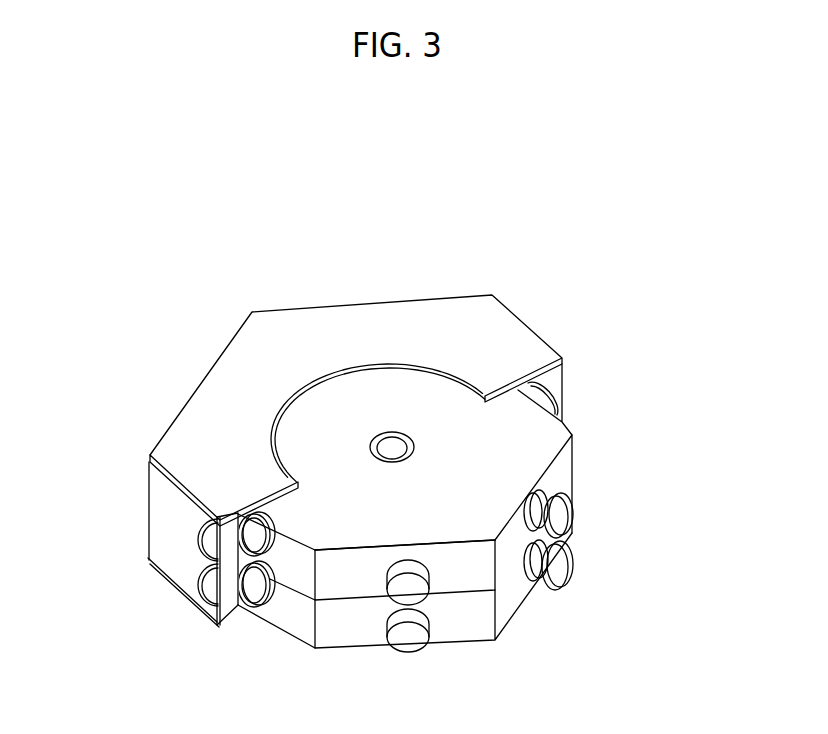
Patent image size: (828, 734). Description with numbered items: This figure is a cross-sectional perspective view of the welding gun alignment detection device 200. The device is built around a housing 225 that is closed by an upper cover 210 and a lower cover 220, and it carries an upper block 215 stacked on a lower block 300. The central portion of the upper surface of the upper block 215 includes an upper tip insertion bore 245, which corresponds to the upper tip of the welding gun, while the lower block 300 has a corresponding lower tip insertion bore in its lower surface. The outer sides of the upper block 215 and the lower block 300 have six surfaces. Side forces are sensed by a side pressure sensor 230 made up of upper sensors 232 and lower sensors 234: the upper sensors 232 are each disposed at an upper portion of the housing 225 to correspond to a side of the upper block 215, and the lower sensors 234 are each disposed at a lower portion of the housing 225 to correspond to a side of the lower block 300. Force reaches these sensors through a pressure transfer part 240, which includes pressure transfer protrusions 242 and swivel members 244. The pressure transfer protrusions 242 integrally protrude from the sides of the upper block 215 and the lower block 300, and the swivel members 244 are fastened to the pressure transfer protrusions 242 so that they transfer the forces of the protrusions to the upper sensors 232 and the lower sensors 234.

The welding gun alignment detection device 200 is at (369, 266).
The upper cover 210 is at (156, 490).
The upper block 215 is at (457, 572).
The lower cover 220 is at (198, 607).
The housing 225 is at (148, 446).
The side pressure sensor 230 is at (75, 573).
The upper sensors 232 is at (208, 540).
The lower sensors 234 is at (208, 587).
The pressure transfer part 240 is at (668, 425).
The pressure transfer protrusions 242 is at (532, 557).
The swivel members 244 is at (562, 567).
The upper tip insertion bore 245 is at (394, 440).
The lower block 300 is at (473, 618).